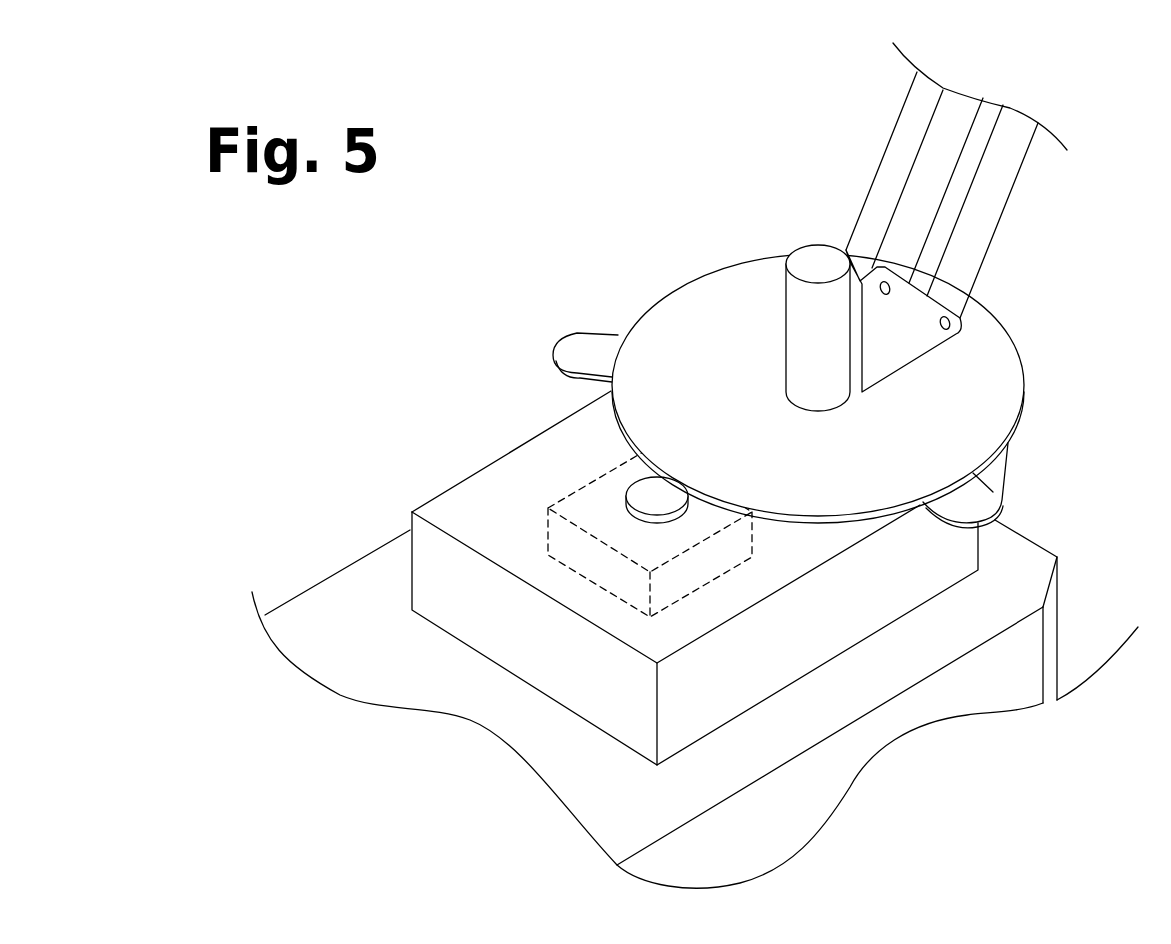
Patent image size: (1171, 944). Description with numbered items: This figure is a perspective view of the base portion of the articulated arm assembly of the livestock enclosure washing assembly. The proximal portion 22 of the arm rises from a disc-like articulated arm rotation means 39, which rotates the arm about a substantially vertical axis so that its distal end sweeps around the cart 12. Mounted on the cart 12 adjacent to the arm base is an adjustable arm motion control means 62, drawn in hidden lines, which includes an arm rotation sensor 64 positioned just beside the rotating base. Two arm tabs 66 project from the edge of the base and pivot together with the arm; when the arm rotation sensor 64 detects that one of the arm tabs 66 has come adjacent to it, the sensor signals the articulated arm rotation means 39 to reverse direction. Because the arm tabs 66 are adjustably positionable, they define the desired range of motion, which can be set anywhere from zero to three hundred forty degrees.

The cart 12 is at (933, 705).
The proximal portion 22 is at (997, 173).
The articulated arm rotation means 39 is at (962, 388).
The adjustable arm motion control means 62 is at (585, 510).
The arm rotation sensor 64 is at (650, 498).
The arm tabs 66 is at (577, 348).